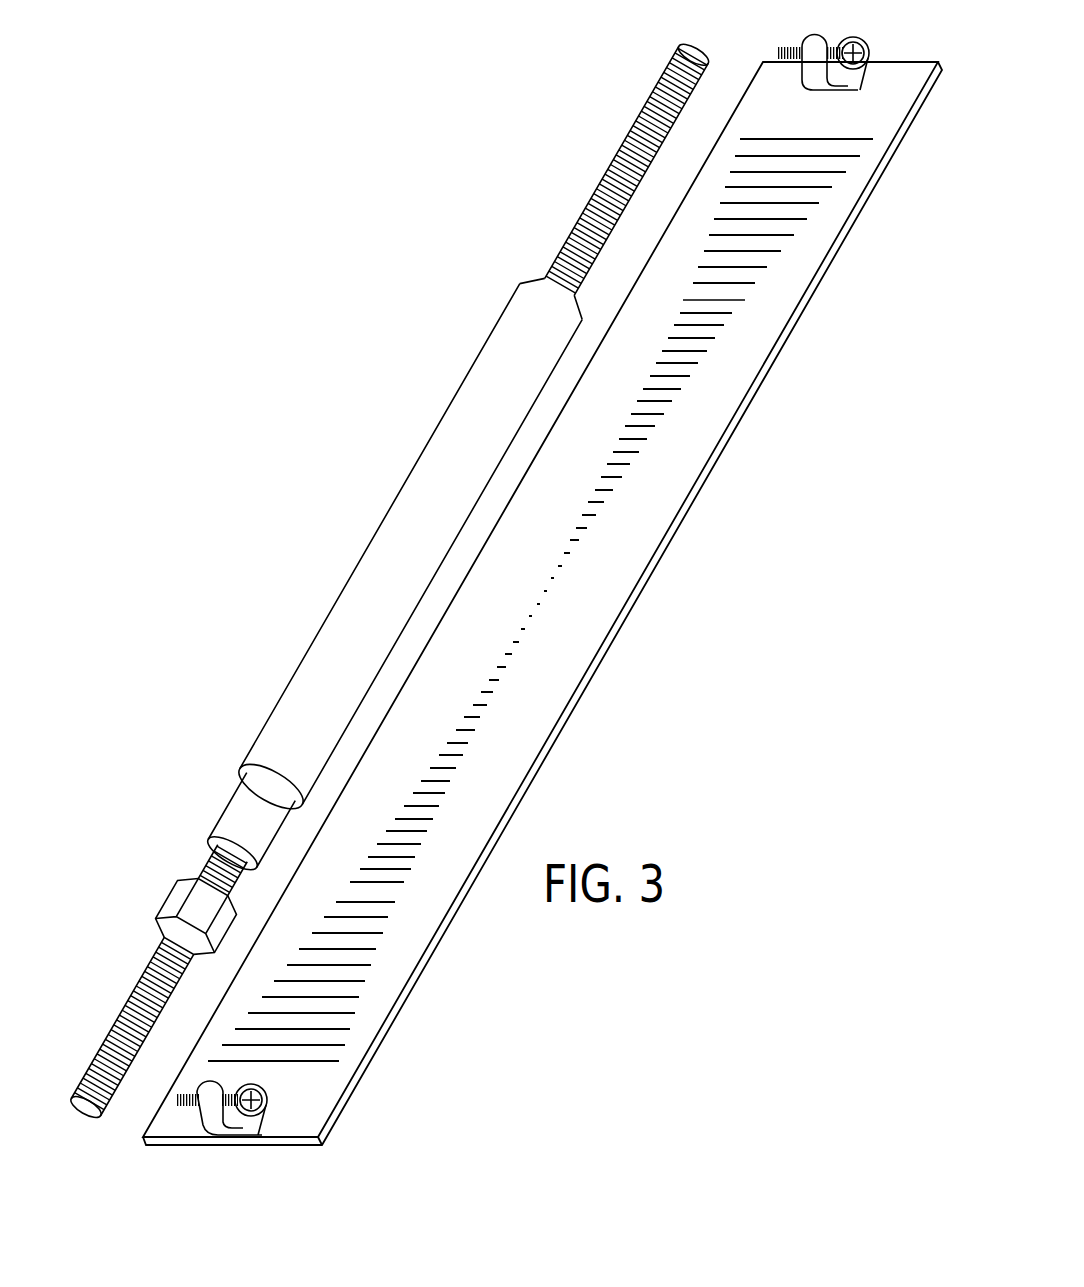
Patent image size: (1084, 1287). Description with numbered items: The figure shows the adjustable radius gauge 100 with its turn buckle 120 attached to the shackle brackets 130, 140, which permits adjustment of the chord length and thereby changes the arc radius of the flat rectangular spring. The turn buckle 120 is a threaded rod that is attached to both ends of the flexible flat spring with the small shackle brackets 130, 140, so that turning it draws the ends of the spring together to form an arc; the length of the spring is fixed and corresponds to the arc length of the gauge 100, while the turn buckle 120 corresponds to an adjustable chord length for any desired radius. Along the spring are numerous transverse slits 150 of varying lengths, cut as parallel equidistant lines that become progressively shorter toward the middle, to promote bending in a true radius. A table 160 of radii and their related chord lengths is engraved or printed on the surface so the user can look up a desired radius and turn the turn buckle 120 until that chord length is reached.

The adjustable radius gauge 100 is at (363, 338).
The turn buckle 120 is at (373, 592).
The shackle bracket 130 is at (808, 38).
The shackle bracket 140 is at (337, 1080).
The transverse slits 150 is at (767, 267).
The table of radii and chord lengths 160 is at (697, 457).